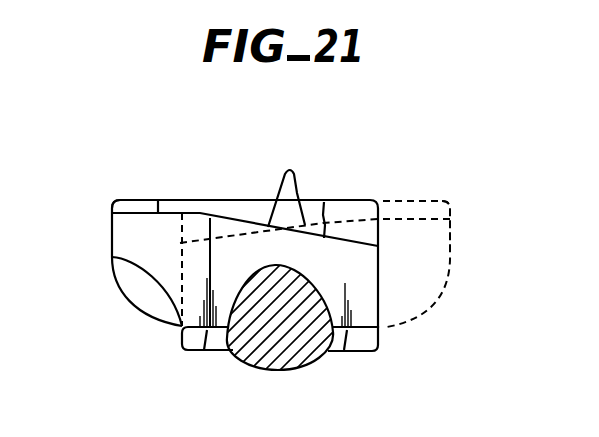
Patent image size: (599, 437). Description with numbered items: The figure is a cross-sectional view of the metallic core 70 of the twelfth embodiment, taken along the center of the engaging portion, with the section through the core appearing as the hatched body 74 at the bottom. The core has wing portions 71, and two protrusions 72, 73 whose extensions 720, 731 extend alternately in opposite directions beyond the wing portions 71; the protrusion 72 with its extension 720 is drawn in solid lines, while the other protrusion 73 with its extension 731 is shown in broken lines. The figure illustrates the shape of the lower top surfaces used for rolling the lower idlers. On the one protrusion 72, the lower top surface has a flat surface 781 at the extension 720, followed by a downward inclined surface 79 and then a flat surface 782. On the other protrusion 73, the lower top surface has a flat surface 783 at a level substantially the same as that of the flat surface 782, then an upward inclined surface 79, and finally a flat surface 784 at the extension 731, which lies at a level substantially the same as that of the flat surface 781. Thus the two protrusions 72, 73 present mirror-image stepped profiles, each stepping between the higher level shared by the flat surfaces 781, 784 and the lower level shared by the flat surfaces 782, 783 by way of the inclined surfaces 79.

The connector assembly 70 is at (220, 370).
The wing portion 71 is at (380, 349).
The protrusion 72 is at (112, 242).
The extension 720 is at (110, 222).
The protrusion 73 is at (435, 253).
The extension 731 is at (449, 226).
The cable 74 is at (304, 362).
The flat surface 781 is at (135, 212).
The flat surface 782 is at (363, 246).
The flat surface 783 is at (197, 243).
The flat surface 784 is at (410, 219).
The inclined surface 79 is at (288, 183).